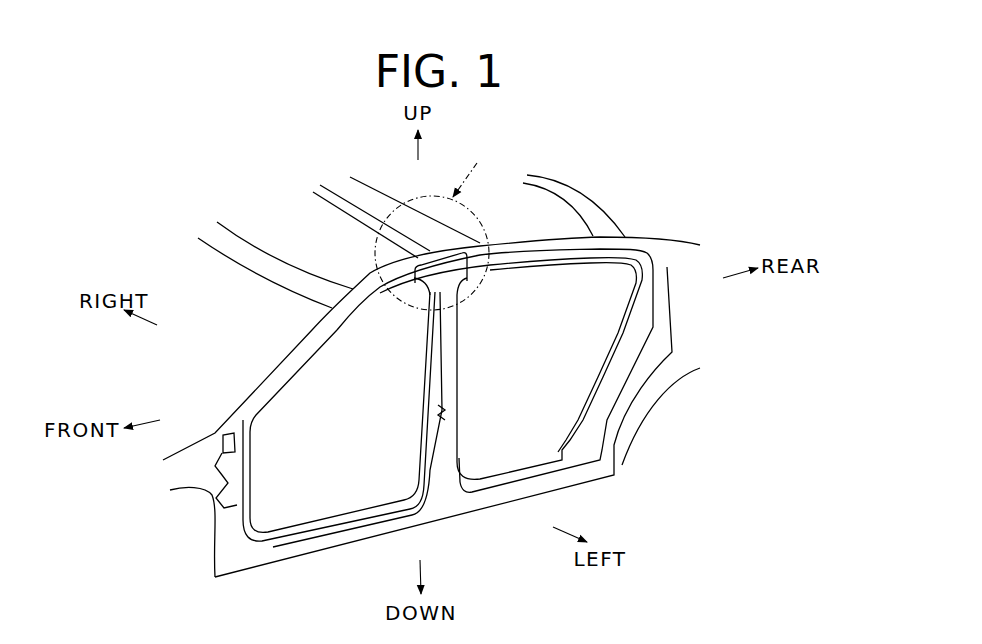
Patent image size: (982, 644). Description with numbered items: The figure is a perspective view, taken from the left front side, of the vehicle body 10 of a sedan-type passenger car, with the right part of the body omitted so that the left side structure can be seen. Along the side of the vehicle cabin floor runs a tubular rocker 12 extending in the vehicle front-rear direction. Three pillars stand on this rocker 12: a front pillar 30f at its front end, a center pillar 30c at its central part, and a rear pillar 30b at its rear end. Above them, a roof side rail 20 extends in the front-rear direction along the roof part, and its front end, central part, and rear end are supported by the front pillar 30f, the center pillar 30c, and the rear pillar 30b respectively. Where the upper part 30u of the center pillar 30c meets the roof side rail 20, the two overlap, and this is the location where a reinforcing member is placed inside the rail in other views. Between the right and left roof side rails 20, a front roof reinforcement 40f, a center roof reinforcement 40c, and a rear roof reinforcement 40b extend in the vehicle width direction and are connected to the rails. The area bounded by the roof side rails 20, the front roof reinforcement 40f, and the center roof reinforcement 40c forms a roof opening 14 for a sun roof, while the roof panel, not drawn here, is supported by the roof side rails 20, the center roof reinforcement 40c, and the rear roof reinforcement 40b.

The vehicle body 10 is at (200, 176).
The rocker 12 is at (340, 537).
The roof opening 14 is at (347, 210).
The roof side rail 20 is at (562, 236).
The rear pillar 30b is at (660, 270).
The center pillar 30c is at (421, 381).
The front pillar 30f is at (252, 398).
The upper part of the center pillar 30u is at (416, 298).
The rear roof reinforcement 40b is at (573, 182).
The center roof reinforcement 40c is at (383, 194).
The front roof reinforcement 40f is at (259, 247).